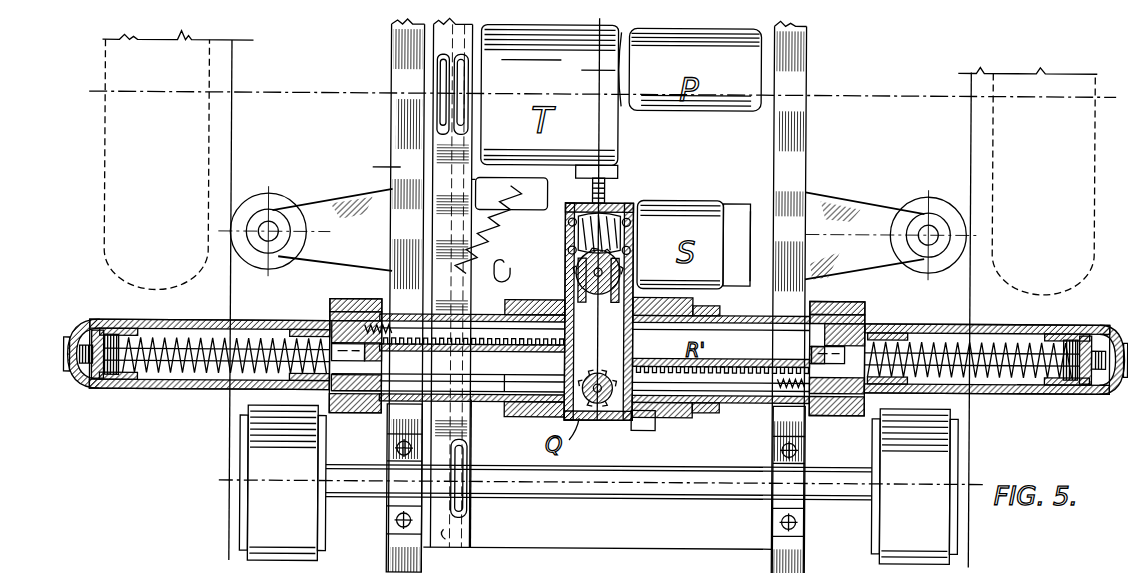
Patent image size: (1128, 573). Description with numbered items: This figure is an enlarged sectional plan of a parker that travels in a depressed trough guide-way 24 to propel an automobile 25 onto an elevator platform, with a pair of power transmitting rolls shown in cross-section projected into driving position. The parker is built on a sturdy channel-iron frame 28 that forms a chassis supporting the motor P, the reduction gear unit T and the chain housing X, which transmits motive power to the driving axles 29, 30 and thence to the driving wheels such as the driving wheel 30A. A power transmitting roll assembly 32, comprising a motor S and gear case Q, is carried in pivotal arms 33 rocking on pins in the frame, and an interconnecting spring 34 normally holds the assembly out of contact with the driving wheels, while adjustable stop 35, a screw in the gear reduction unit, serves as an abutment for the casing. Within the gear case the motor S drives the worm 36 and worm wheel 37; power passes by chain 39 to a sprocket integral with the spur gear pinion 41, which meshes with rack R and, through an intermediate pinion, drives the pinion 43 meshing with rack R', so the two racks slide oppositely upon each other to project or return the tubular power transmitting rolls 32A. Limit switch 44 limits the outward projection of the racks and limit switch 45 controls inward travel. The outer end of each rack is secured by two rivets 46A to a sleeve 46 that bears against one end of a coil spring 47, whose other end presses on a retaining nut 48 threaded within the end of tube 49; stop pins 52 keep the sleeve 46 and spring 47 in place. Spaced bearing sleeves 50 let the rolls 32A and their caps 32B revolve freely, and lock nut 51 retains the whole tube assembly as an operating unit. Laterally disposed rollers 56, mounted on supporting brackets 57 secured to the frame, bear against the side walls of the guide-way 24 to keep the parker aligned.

The guide-way 24 is at (233, 140).
The automobile 25 is at (104, 186).
The frame 28 is at (405, 124).
The driving axle 29 is at (673, 503).
The driving axle 30 is at (935, 555).
The driving wheel 30A is at (305, 555).
The power transmitting roll assembly 32 is at (490, 404).
The power transmitting roll 32A is at (213, 321).
The cap 32B is at (86, 320).
The pivotal arm 33 is at (380, 304).
The interconnecting spring 34 is at (508, 228).
The adjustable stop 35 is at (608, 202).
The worm 36 is at (590, 215).
The worm wheel 37 is at (575, 266).
The chain 39 is at (575, 294).
The spur gear pinion 41 is at (628, 318).
The pinion 43 is at (608, 414).
The limit switch 44 is at (556, 373).
The limit switch 45 is at (646, 427).
The sleeve 46 is at (332, 392).
The rivet 46A is at (382, 374).
The coil spring 47 is at (208, 376).
The retaining nut 48 is at (118, 384).
The tube 49 is at (216, 378).
The bearing sleeve 50 is at (128, 322).
The lock nut 51 is at (74, 374).
The stop pin 52 is at (440, 380).
The roller 56 is at (279, 200).
The supporting bracket 57 is at (340, 207).